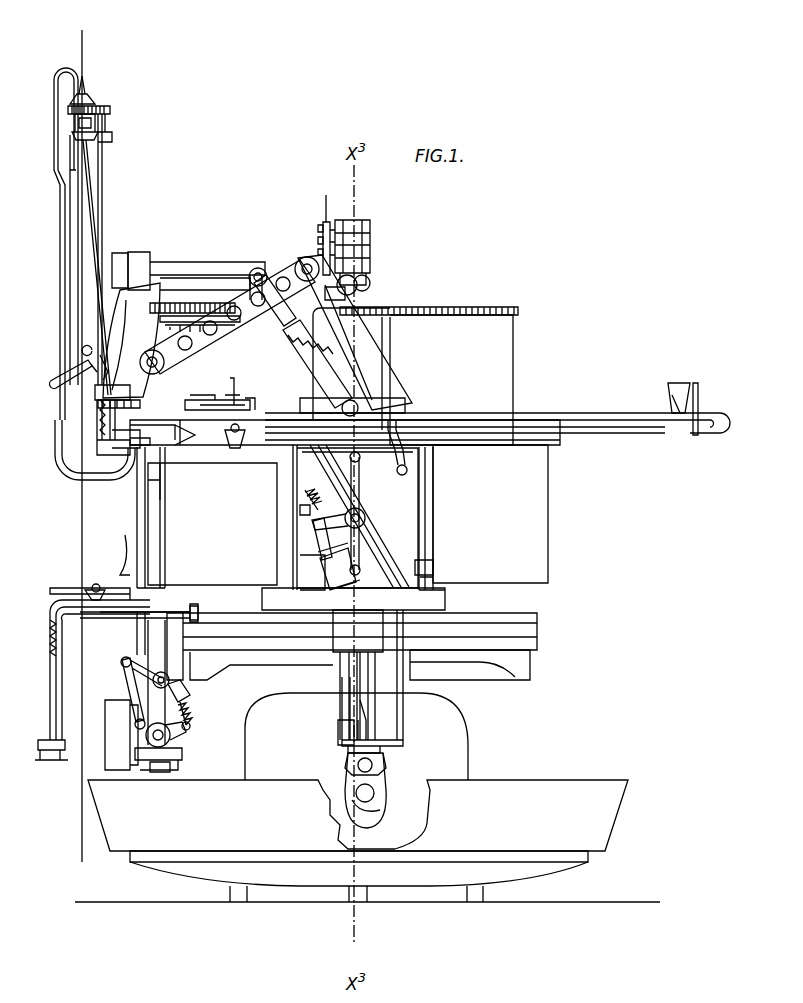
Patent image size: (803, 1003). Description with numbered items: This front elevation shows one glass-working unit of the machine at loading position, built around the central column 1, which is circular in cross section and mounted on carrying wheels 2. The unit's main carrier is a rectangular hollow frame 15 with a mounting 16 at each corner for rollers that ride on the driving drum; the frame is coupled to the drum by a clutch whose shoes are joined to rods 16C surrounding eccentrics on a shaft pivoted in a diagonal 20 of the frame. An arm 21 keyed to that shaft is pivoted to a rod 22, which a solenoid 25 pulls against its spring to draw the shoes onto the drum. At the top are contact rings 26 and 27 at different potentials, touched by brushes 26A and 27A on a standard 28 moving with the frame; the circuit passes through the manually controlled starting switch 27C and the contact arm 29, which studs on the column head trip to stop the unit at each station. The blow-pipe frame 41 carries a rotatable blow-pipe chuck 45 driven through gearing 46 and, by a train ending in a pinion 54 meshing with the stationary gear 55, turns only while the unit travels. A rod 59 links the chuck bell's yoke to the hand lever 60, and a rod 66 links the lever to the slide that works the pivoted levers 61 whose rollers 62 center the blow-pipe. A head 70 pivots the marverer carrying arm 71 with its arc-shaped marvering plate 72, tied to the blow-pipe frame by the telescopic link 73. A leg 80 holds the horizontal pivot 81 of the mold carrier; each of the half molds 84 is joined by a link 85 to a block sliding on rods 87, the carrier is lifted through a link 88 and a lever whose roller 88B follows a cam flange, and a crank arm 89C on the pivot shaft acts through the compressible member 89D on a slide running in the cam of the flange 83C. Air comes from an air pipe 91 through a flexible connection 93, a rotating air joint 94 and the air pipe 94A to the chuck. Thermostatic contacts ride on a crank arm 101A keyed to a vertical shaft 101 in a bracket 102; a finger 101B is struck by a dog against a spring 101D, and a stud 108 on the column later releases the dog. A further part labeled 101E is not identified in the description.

The central column 1 is at (420, 688).
The carrying wheels 2 is at (475, 899).
The rectangular hollow frame 15 is at (436, 530).
The mounting 16 is at (165, 452).
The rods 16C is at (155, 534).
The diagonal 20 is at (366, 520).
The arm 21 is at (358, 502).
The rod 22 is at (318, 545).
The solenoid 25 is at (122, 560).
The contact ring 26 is at (370, 225).
The brush 26A is at (318, 228).
The contact ring 27 is at (370, 242).
The brush 27A is at (318, 240).
The main manually controlled starting switch 27C is at (105, 440).
The standard 28 is at (326, 210).
The contact arm 29 is at (195, 322).
The blow-pipe frame 41 is at (70, 322).
The blow-pipe chuck 45 is at (96, 118).
The gearing 46 is at (96, 108).
The pinion 54 is at (185, 306).
The stationary gear 55 is at (455, 308).
The rod 59 is at (580, 435).
The operating lever 60 is at (55, 375).
The pivoted levers 61 is at (200, 403).
The rollers 62 is at (236, 388).
The rod 66 is at (290, 450).
The head 70 is at (138, 300).
The marverer carrying arm 71 is at (122, 256).
The marvering plate 72 is at (160, 285).
The telescopic link 73 is at (292, 340).
The leg 80 is at (420, 625).
The horizontal pivot 81 is at (172, 736).
The flange 83C is at (520, 662).
The half molds 84 is at (112, 743).
The link 85 is at (150, 760).
The rods 87 is at (160, 772).
The link 88 is at (134, 688).
The roller 88B is at (186, 692).
The crank arm 89C is at (240, 725).
The compressible member 89D is at (190, 704).
The air pipe 91 is at (200, 300).
The flexible connection 93 is at (406, 468).
The rotating air joint 94 is at (400, 418).
The air pipe 94A is at (56, 100).
The vertical shaft 101 is at (50, 680).
The crank arm 101A is at (48, 755).
The finger 101B is at (60, 590).
The spring 101D is at (55, 622).
The conduit clip 101E is at (233, 448).
The bracket 102 is at (412, 712).
The stud 108 is at (198, 608).